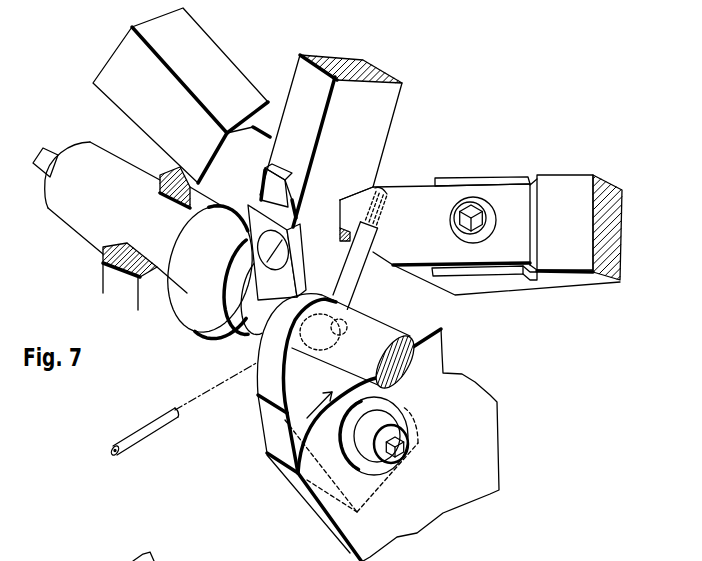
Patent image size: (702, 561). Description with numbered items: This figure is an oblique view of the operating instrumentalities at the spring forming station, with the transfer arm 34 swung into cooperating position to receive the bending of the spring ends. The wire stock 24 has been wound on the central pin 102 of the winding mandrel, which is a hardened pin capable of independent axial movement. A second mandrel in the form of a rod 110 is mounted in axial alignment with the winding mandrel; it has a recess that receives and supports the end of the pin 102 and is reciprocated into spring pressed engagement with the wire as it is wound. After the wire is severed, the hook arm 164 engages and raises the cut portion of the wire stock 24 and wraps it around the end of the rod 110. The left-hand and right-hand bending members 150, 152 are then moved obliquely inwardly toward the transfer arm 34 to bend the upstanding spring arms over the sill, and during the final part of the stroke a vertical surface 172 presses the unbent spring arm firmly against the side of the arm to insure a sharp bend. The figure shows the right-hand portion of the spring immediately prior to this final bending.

The left-hand bending member 150 is at (180, 126).
The transfer arm 34 is at (372, 124).
The right-hand bending member 152 is at (445, 251).
The vertical surface 172 is at (380, 224).
The central pin 102 is at (354, 304).
The rod 110 is at (373, 310).
The hook arm 164 is at (253, 398).
The wire stock 24 is at (156, 427).